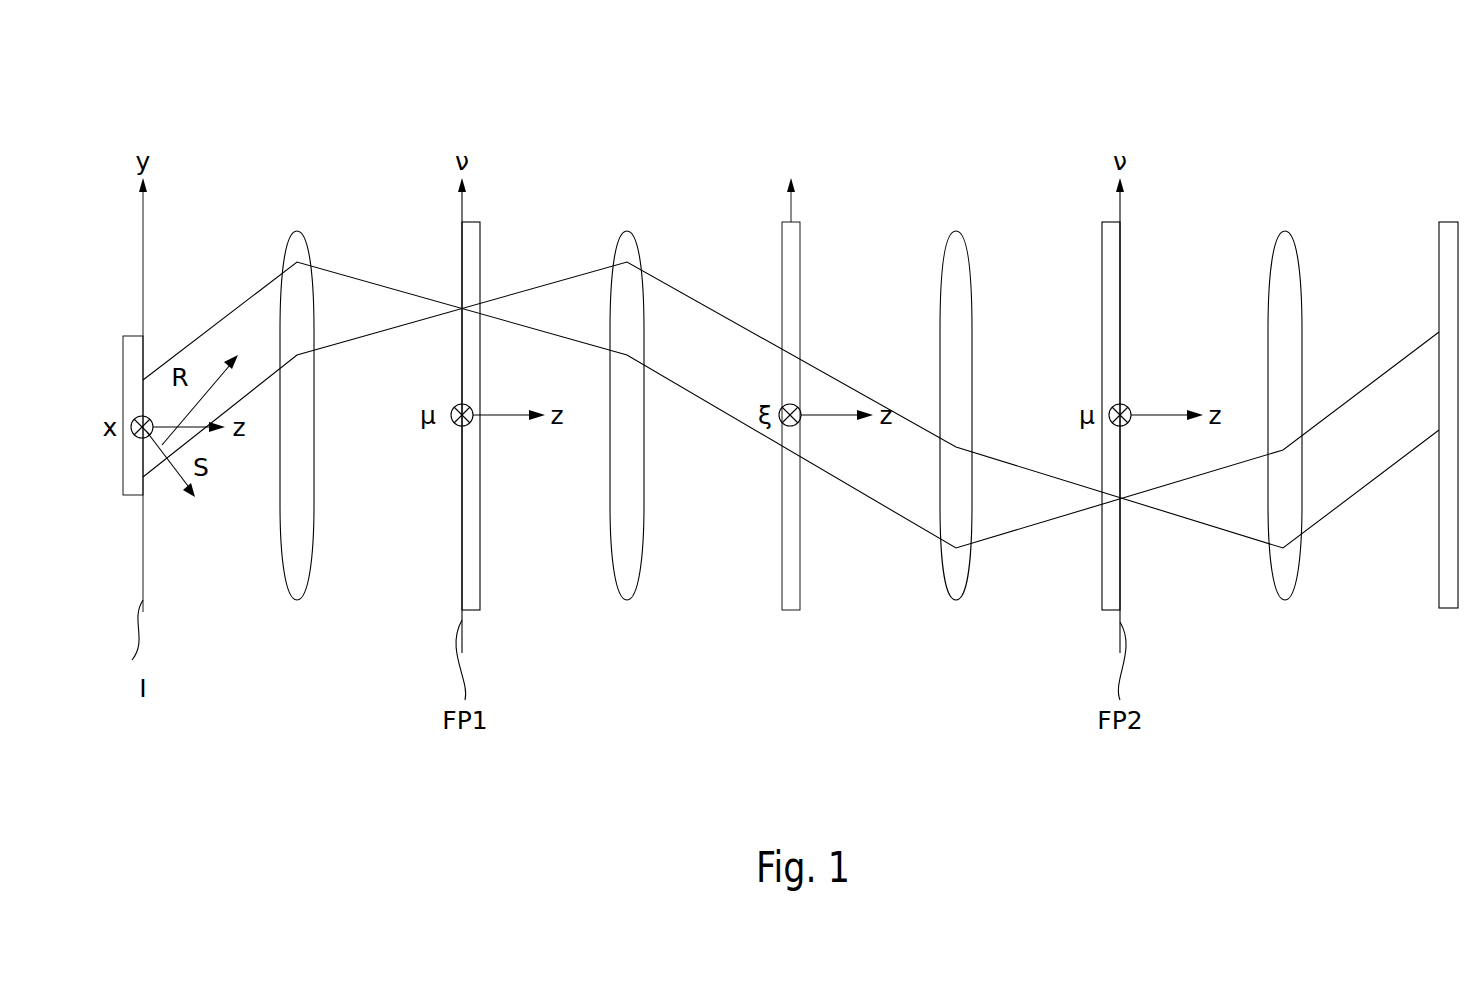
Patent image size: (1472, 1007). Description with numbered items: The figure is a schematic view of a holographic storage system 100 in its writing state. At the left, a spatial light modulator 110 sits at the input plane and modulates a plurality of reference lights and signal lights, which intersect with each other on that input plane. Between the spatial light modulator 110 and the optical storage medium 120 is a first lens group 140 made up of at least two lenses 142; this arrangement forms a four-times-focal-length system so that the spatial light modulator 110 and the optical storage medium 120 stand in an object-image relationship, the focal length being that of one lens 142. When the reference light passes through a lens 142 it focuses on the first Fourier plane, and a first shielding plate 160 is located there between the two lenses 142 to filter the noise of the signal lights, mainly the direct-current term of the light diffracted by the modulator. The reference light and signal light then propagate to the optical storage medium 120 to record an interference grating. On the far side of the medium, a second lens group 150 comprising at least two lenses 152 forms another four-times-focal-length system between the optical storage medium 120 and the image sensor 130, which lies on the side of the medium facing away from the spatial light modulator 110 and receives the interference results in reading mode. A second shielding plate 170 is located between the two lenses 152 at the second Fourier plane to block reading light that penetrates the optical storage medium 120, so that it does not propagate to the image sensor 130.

The holographic storage system 100 is at (158, 33).
The spatial light modulator 110 is at (123, 483).
The optical storage medium 120 is at (782, 590).
The image sensor 130 is at (1439, 584).
The first lens group 140 is at (655, 104).
The lens 142 is at (296, 231).
The second lens group 150 is at (927, 104).
The lens 152 is at (954, 231).
The first shielding plate 160 is at (480, 570).
The second shielding plate 170 is at (1102, 570).